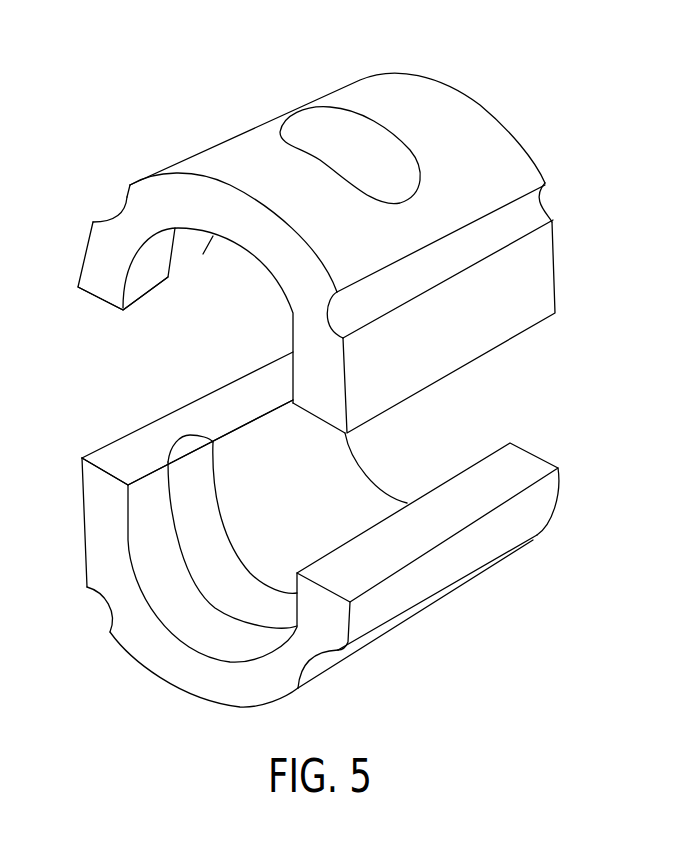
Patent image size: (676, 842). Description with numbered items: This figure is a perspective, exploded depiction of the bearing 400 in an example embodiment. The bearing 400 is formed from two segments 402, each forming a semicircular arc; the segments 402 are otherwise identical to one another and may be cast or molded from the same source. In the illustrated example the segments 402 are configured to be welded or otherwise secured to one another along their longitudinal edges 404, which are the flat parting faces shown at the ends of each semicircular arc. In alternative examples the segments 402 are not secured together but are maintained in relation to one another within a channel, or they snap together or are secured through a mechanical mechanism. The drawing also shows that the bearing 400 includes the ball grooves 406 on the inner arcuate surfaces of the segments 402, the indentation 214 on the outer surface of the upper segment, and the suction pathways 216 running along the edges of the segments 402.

The bearing 400 is at (120, 108).
The indentation 214 is at (338, 128).
The suction pathways 216 is at (531, 212).
The segments 402 is at (535, 291).
The longitudinal edges 404 is at (113, 292).
The ball grooves 406 is at (193, 244).